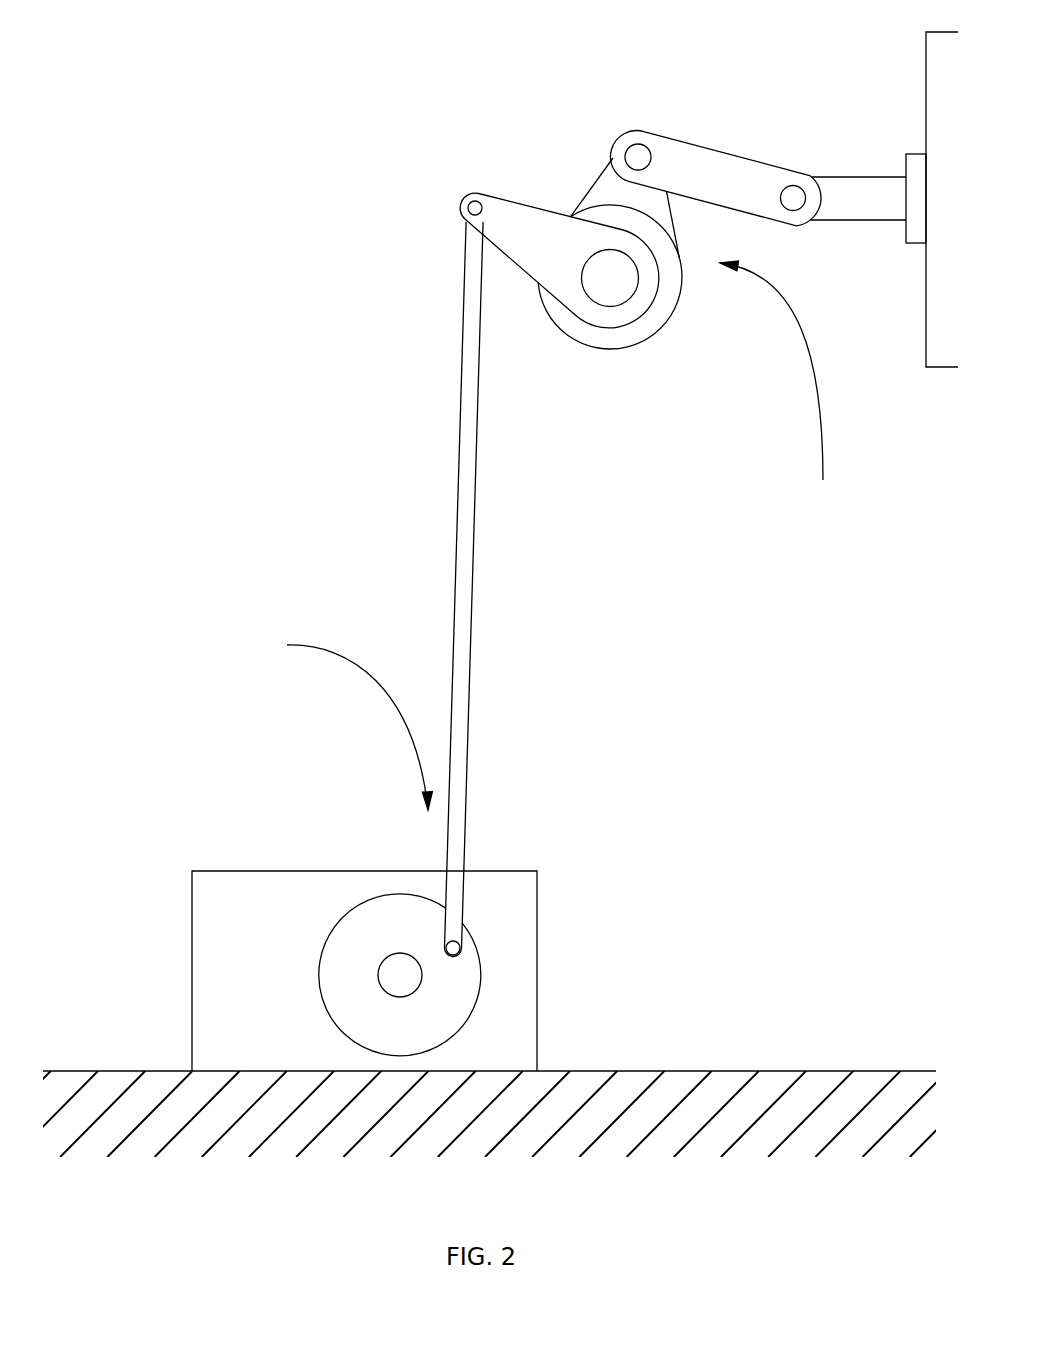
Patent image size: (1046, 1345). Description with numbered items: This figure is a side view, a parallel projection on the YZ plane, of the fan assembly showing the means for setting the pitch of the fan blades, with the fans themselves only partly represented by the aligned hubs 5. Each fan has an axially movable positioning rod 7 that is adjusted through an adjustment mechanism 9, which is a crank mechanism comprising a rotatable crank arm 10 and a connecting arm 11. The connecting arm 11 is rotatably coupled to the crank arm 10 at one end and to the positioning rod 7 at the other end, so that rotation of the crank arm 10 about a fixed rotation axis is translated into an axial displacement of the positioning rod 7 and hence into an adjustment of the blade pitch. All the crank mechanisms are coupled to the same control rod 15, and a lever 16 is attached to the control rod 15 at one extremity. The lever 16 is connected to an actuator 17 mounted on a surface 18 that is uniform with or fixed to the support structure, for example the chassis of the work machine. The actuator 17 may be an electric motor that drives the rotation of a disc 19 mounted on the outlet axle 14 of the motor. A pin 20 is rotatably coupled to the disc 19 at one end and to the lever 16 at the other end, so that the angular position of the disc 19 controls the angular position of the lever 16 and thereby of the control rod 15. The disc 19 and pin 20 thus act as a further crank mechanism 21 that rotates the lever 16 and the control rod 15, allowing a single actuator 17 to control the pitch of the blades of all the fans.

The hub 5 is at (940, 59).
The positioning rod 7 is at (868, 198).
The adjustment mechanism 9 is at (775, 384).
The crank arm 10 is at (610, 187).
The connecting arm 11 is at (739, 172).
The outlet axle 14 is at (402, 973).
The control rod 15 is at (610, 278).
The lever 16 is at (533, 227).
The actuator 17 is at (242, 887).
The surface 18 is at (639, 1087).
The disc 19 is at (400, 918).
The pin 20 is at (472, 448).
The further crank mechanism 21 is at (345, 720).